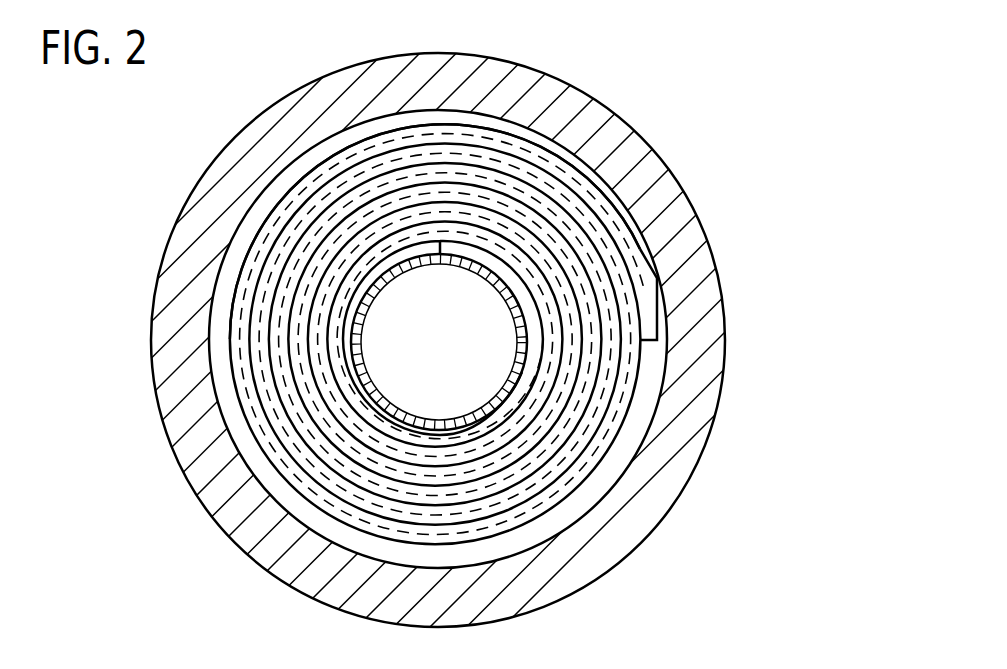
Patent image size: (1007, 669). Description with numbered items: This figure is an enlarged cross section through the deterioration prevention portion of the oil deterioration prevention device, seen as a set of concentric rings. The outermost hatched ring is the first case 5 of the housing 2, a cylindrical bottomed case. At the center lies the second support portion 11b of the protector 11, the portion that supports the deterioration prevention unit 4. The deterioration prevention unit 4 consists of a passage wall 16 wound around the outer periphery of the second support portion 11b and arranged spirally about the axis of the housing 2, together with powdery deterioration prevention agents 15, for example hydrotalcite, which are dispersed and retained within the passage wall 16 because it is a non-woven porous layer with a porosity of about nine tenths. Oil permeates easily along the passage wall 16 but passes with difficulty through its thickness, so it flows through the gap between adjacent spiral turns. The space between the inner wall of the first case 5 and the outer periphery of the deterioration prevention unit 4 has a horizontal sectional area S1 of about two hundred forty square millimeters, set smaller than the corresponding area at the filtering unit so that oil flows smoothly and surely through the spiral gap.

The housing 2 is at (605, 80).
The first case 5 is at (653, 164).
The passage wall 16 is at (642, 253).
The deterioration prevention agents 15 is at (608, 448).
The horizontal sectional area S1 is at (600, 486).
The deterioration prevention unit 4 is at (553, 537).
The second support portion 11b is at (363, 336).
The protector 11 is at (439, 342).